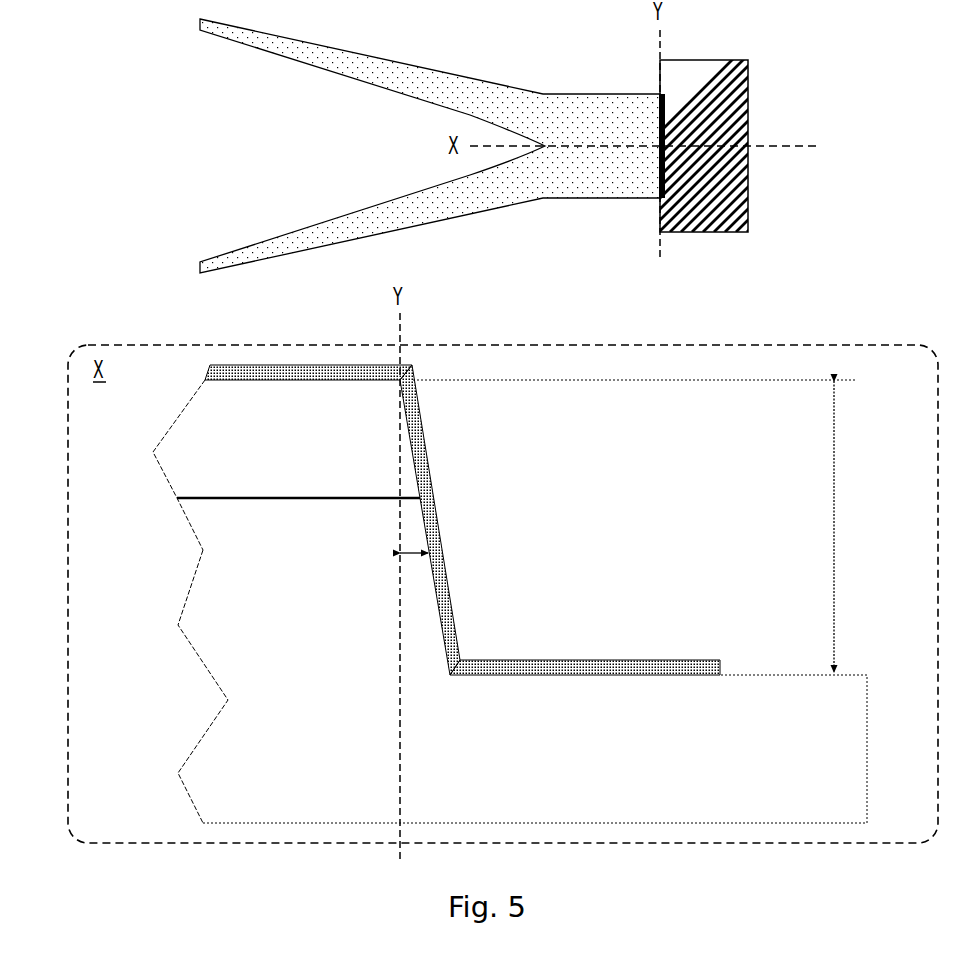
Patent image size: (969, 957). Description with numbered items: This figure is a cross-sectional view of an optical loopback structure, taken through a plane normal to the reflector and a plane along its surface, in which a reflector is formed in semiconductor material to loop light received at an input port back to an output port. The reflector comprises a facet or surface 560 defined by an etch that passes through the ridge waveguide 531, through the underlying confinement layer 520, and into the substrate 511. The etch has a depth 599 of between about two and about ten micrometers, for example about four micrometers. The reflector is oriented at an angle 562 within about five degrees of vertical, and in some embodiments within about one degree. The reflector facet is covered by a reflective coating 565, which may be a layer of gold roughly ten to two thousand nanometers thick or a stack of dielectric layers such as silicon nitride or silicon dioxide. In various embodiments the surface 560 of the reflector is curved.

The substrate 511 is at (300, 744).
The confinement layer 520 is at (296, 509).
The ridge waveguide 531 is at (314, 448).
The facet or surface 560 is at (468, 516).
The angle 562 is at (415, 566).
The reflective coating 565 is at (722, 668).
The depth 599 is at (634, 526).